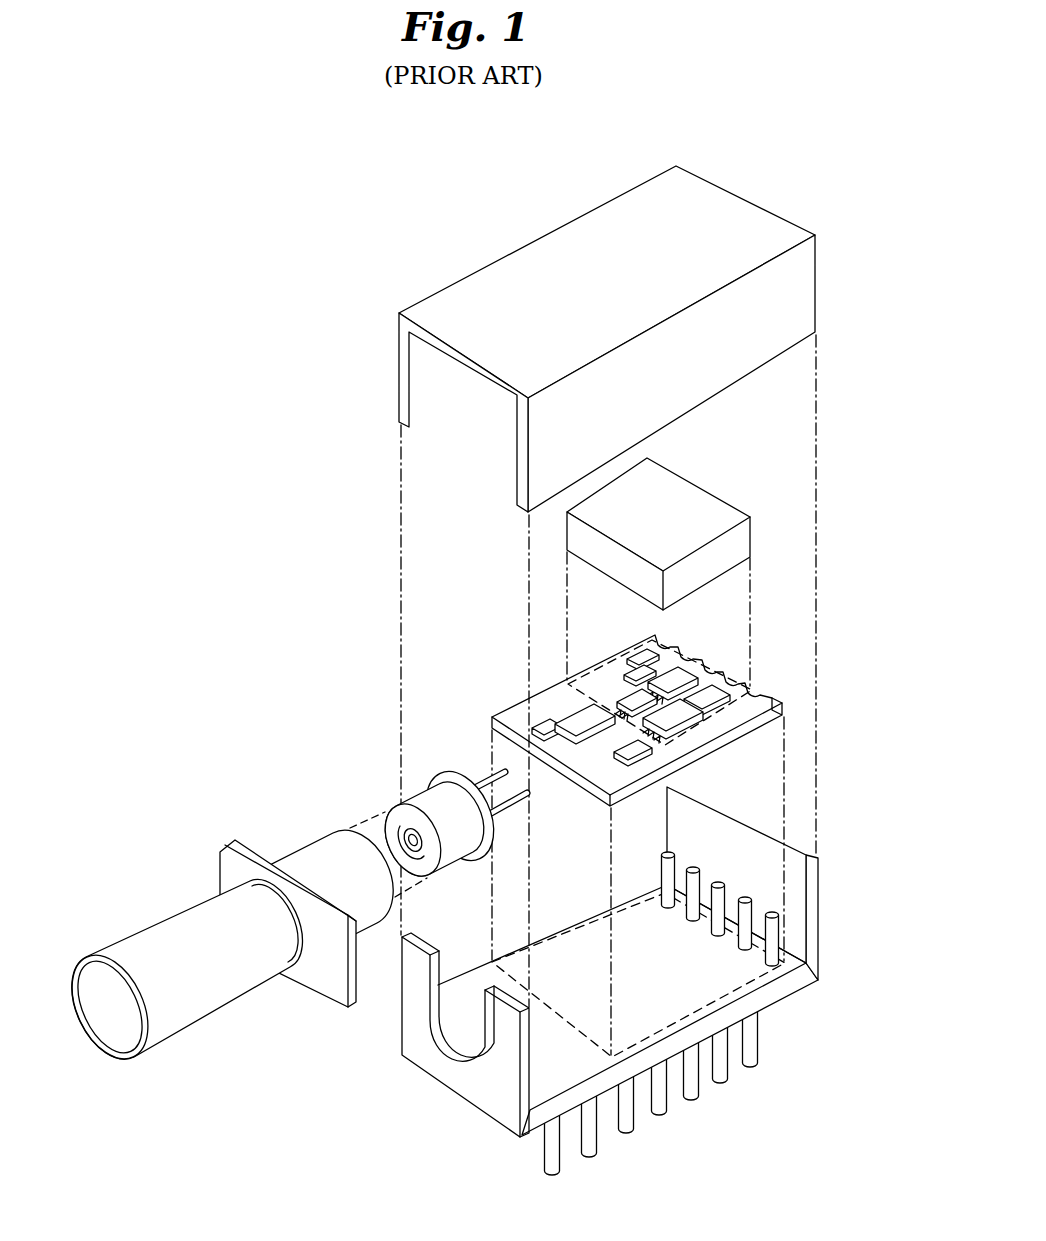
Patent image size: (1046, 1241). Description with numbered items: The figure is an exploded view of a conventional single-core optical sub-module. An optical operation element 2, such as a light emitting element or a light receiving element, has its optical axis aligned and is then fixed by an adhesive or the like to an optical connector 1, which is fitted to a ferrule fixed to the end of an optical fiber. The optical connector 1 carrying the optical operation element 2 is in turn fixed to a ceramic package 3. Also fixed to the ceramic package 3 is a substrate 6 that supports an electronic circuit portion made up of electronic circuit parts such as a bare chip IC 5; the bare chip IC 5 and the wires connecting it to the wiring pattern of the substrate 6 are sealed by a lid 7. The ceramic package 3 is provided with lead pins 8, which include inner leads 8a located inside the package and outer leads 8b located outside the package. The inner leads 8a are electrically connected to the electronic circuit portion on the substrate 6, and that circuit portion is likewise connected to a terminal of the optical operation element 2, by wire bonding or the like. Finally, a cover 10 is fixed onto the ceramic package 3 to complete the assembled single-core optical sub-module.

The optical connector 1 is at (208, 1007).
The optical operation element 2 is at (403, 795).
The ceramic package 3 is at (665, 981).
The bare chip IC 5 is at (681, 720).
The substrate 6 is at (688, 750).
The lid 7 is at (680, 488).
The lead pins 8 is at (665, 981).
The inner leads 8a is at (773, 909).
The outer leads 8b is at (788, 1023).
The cover 10 is at (762, 216).